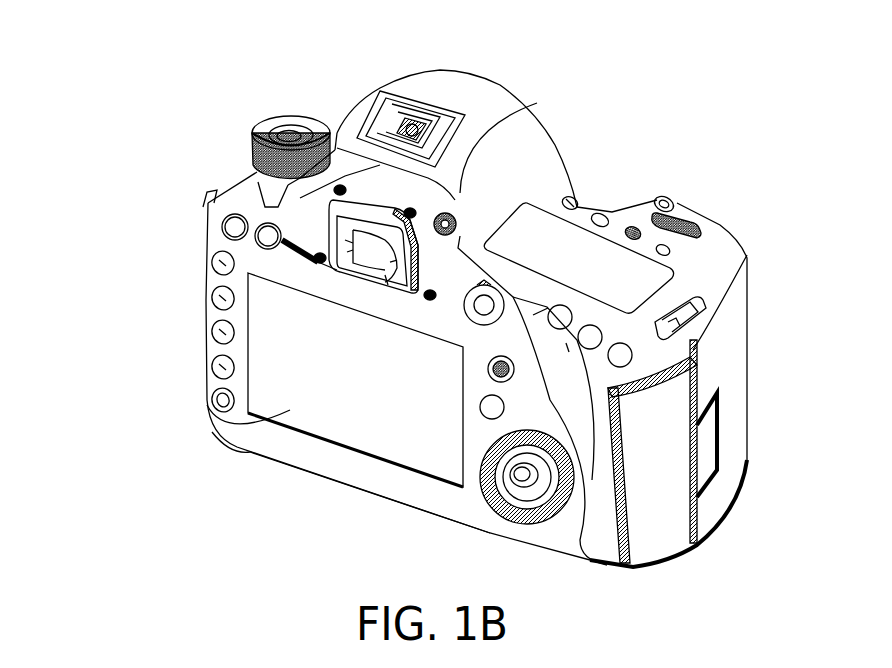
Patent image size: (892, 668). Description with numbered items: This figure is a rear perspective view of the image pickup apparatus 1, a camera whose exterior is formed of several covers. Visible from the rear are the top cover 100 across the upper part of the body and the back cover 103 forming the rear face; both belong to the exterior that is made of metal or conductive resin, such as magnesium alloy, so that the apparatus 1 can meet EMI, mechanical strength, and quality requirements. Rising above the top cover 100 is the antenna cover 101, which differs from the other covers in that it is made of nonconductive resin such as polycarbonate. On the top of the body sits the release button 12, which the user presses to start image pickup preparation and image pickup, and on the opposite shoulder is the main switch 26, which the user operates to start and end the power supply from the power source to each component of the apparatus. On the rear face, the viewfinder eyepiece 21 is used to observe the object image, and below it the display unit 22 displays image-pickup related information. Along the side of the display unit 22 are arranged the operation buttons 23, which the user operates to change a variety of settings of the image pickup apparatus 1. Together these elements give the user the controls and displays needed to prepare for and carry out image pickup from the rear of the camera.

The image pickup apparatus 1 is at (314, 100).
The release button 12 is at (667, 198).
The viewfinder eyepiece 21 is at (233, 228).
The display unit 22 is at (255, 432).
The operation buttons 23 is at (212, 262).
The main switch 26 is at (255, 190).
The top cover 100 is at (545, 187).
The antenna cover 101 is at (500, 133).
The back cover 103 is at (258, 437).